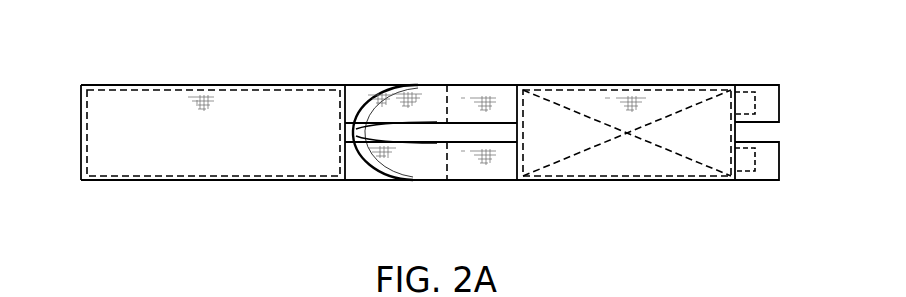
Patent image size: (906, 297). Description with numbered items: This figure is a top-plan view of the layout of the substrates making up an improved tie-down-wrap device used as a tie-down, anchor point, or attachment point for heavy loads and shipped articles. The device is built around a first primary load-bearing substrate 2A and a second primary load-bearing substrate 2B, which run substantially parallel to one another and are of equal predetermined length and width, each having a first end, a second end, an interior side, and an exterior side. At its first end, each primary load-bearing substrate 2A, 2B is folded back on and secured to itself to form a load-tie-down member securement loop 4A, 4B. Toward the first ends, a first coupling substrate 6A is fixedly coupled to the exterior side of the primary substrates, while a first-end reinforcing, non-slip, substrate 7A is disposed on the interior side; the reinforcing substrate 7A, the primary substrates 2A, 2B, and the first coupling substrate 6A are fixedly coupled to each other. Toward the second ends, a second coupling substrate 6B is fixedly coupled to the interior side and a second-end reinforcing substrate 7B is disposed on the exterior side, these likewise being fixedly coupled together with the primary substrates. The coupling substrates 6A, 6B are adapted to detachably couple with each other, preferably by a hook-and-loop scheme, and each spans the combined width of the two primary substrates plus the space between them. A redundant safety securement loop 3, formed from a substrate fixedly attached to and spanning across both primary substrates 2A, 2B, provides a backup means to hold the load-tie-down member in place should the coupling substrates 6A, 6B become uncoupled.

The redundant safety securement loop 3 is at (422, 95).
The first primary load-bearing substrate 2A is at (477, 95).
The second primary load-bearing substrate 2B is at (484, 162).
The load-tie-down member securement loop 4A is at (760, 90).
The load-tie-down member securement loop 4B is at (766, 161).
The first coupling substrate 6A is at (627, 152).
The first-end reinforcing, non-slip, substrate 7A is at (641, 154).
The second coupling substrate 6B is at (213, 160).
The second-end reinforcing substrate 7B is at (209, 146).